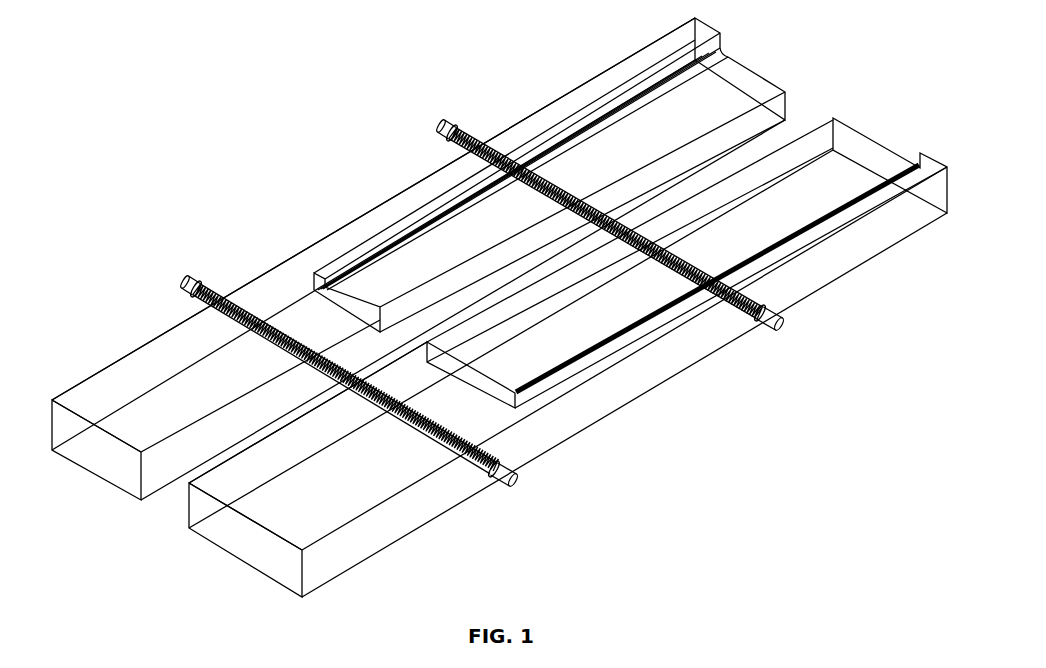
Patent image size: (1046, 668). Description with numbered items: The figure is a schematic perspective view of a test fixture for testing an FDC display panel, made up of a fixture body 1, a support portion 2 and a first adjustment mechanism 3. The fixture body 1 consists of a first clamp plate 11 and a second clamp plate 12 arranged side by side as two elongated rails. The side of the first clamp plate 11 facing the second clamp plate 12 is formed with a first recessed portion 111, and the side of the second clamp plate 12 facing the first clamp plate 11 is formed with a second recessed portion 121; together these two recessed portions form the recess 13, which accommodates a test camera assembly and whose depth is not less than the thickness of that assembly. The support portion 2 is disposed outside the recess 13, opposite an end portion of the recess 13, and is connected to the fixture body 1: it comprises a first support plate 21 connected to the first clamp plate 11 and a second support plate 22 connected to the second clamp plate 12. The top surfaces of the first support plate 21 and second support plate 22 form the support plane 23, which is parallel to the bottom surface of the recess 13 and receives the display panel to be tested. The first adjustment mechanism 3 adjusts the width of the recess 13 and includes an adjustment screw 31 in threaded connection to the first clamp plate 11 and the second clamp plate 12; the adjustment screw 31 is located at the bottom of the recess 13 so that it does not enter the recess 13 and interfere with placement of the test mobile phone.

The fixture body 1 is at (630, 213).
The first clamp plate 11 is at (780, 107).
The first recessed portion 111 is at (722, 95).
The second clamp plate 12 is at (818, 135).
The second recessed portion 121 is at (852, 175).
The recess 13 is at (625, 204).
The support portion 2 is at (499, 307).
The first support plate 21 is at (128, 483).
The second support plate 22 is at (200, 532).
The support plane 23 is at (153, 358).
The first adjustment mechanism 3 is at (443, 121).
The adjustment screw 31 is at (473, 284).